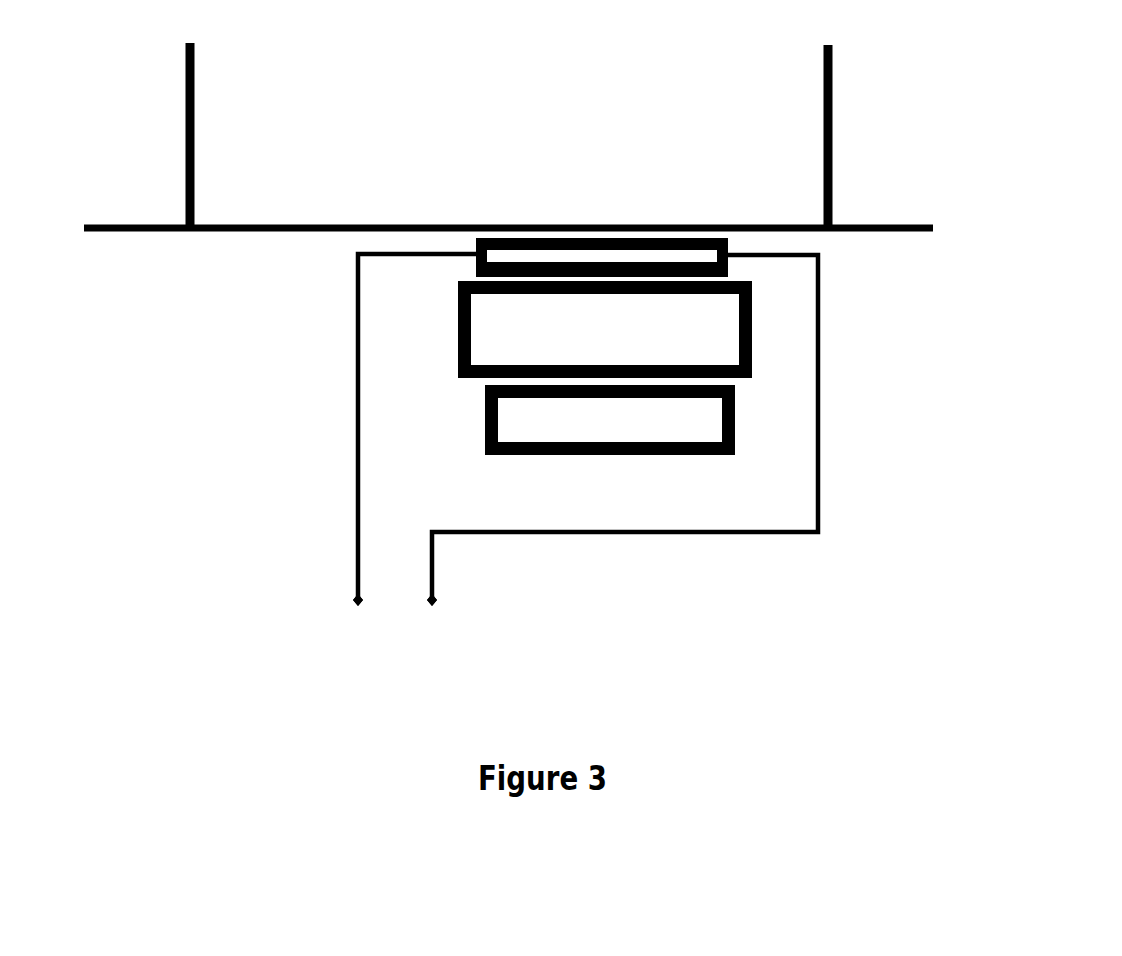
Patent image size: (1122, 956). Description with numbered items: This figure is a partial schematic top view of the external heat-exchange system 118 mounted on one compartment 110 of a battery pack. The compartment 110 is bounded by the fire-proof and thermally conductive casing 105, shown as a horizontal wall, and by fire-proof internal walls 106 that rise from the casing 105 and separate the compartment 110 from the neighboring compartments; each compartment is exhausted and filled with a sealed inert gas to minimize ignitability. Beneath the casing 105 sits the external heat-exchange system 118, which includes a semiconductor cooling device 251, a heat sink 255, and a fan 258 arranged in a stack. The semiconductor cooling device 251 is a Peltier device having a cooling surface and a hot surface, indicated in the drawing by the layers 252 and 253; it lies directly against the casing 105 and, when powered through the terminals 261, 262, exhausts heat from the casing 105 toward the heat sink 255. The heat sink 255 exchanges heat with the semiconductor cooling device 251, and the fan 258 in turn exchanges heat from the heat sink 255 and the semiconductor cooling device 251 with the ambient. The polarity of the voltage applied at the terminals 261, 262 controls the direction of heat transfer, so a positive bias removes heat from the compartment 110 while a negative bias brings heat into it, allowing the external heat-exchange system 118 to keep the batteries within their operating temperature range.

The compartment 110 is at (531, 70).
The thermally conductive casing 105 is at (267, 230).
The internal wall 106 is at (194, 93).
The external heat-exchange system 118 is at (1005, 243).
The semiconductor cooling device 251 is at (617, 257).
The electrode 252 is at (653, 240).
The second electrode layer 253 is at (665, 272).
The heat sink 255 is at (487, 330).
The fan 258 is at (683, 418).
The terminal 261 is at (357, 605).
The terminal 262 is at (435, 606).